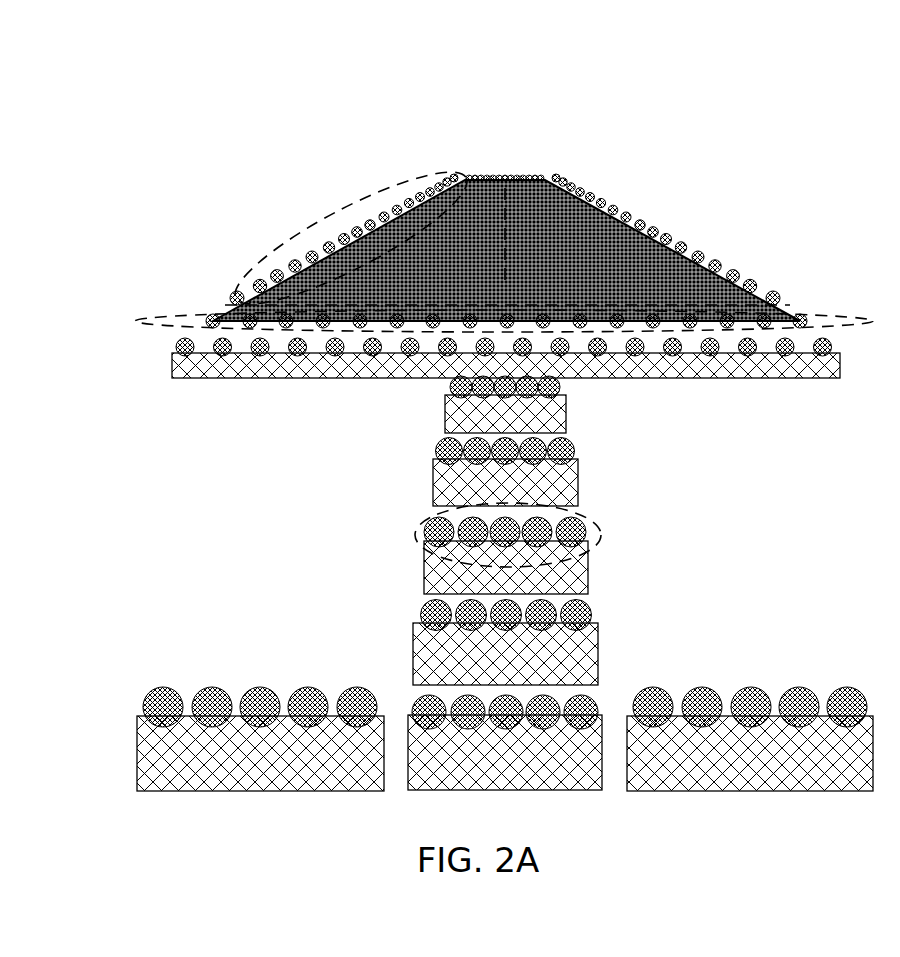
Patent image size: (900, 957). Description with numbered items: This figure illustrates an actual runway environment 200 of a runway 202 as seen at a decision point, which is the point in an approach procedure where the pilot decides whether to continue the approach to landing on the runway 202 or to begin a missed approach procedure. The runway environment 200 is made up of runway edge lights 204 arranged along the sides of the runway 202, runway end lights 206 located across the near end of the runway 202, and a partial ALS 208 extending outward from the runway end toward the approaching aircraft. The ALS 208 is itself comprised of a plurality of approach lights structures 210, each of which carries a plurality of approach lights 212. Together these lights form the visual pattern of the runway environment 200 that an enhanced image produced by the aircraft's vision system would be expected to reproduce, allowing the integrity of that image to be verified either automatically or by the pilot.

The runway environment 200 is at (173, 83).
The runway 202 is at (590, 277).
The runway edge lights 204 is at (356, 191).
The runway end lights 206 is at (163, 301).
The partial ALS 208 is at (437, 567).
The approach lights structures 210 is at (597, 564).
The approach lights 212 is at (505, 533).